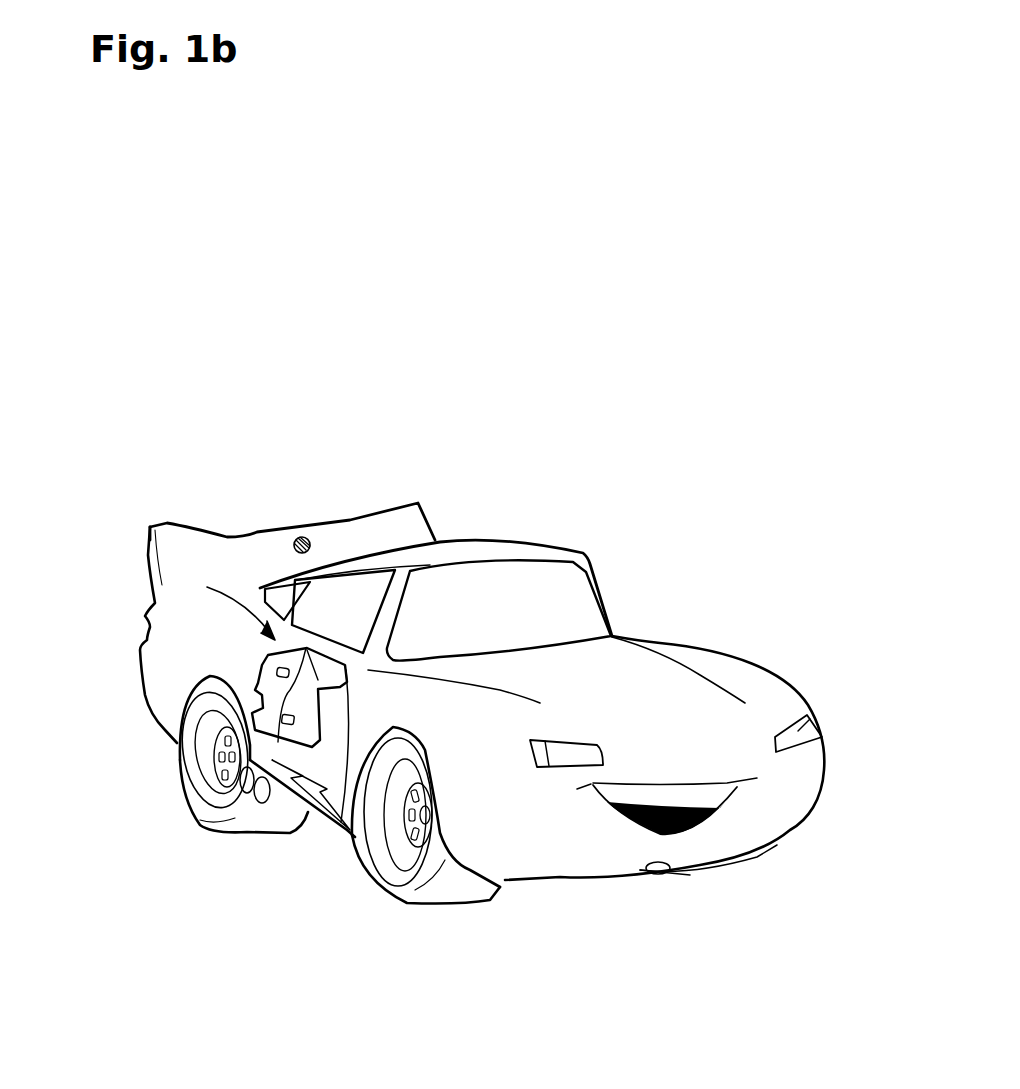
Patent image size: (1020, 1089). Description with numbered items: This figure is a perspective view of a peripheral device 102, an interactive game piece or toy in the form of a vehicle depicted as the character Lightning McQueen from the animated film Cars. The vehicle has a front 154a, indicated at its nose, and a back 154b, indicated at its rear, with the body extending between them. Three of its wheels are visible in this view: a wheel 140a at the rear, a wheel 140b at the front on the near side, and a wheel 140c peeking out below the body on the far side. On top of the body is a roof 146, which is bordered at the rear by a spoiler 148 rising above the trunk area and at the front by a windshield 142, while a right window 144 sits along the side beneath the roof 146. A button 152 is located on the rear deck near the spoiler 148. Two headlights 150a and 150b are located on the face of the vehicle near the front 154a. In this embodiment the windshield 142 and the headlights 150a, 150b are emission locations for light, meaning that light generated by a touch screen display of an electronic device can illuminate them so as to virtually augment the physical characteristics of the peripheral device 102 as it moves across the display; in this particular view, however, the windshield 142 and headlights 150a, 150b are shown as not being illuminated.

The peripheral device 102 is at (830, 97).
The wheel 140a is at (200, 808).
The wheel 140b is at (392, 892).
The wheel 140c is at (685, 870).
The windshield 142 is at (499, 610).
The right window 144 is at (347, 609).
The roof 146 is at (487, 557).
The spoiler 148 is at (373, 530).
The headlight 150a is at (585, 758).
The headlight 150b is at (800, 727).
The button 152 is at (298, 540).
The front 154a is at (793, 904).
The back 154b is at (175, 472).